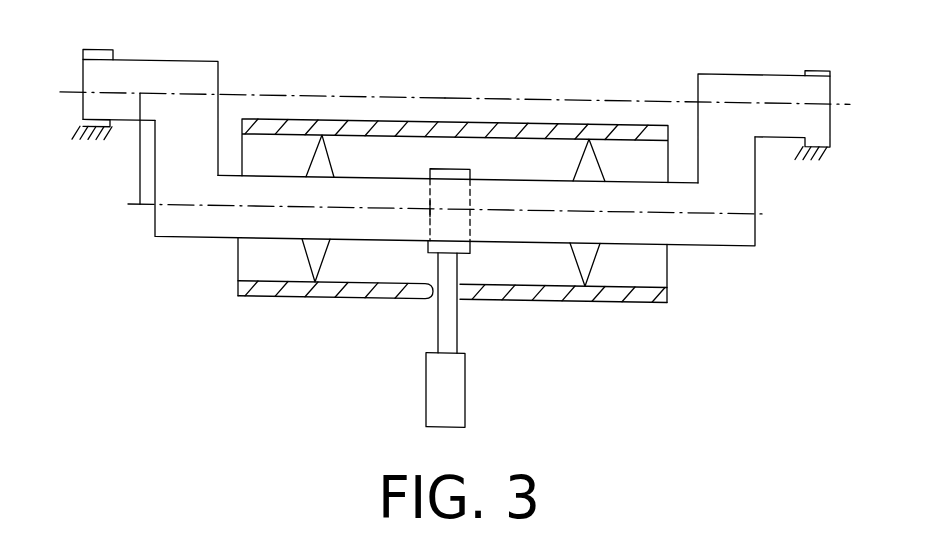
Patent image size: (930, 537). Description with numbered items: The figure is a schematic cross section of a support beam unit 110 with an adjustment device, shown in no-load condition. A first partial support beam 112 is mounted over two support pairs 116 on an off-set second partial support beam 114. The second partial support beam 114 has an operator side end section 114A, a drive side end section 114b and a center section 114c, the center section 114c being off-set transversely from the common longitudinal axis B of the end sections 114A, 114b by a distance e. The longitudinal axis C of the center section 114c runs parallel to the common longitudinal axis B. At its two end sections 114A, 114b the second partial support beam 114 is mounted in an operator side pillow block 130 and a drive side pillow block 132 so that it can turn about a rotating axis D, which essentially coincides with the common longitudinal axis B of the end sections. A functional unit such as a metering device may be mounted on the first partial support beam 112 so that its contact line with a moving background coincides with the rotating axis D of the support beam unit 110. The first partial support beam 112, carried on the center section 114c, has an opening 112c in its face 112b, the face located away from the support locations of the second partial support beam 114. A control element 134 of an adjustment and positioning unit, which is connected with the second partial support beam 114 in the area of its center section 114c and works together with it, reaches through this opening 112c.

The support beam unit 110 is at (451, 216).
The first partial support beam 112 is at (588, 322).
The face 112b is at (362, 290).
The opening 112c is at (458, 300).
The second partial support beam 114 is at (718, 232).
The operator side end section 114A is at (122, 77).
The drive side end section 114b is at (727, 87).
The center section 114c is at (550, 227).
The support pairs 116 is at (263, 263).
The operator side pillow block 130 is at (86, 140).
The drive side pillow block 132 is at (818, 160).
The control element 134 is at (447, 337).
The common longitudinal axis B is at (360, 95).
The longitudinal axis of center section C is at (160, 208).
The rotating axis D is at (442, 95).
The off-set distance e is at (131, 148).